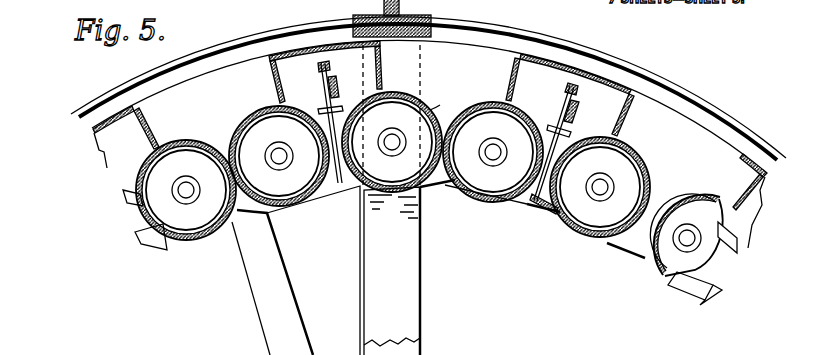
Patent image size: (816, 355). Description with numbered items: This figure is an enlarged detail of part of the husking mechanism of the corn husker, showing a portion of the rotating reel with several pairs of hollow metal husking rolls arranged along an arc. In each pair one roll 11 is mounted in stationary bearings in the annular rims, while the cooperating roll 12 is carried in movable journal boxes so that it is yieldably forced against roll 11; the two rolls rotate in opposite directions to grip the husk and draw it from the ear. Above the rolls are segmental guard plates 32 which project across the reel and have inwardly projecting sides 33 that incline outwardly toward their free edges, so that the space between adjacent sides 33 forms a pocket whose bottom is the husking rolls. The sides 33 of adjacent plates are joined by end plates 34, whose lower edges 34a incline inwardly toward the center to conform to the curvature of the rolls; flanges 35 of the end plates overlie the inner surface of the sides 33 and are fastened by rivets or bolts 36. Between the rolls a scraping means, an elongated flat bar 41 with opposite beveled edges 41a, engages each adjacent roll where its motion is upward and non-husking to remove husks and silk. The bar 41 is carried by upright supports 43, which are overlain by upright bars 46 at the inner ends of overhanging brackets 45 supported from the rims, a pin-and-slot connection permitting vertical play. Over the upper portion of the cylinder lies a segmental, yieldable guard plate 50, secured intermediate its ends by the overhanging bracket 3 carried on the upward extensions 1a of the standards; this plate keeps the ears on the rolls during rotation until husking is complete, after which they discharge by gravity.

The upward extension 1a is at (392, 271).
The upper brace bar 3 is at (402, 8).
The husking roll 11 is at (200, 240).
The husking roll 12 is at (580, 240).
The guard plate 32 is at (307, 50).
The inwardly projecting side 33 is at (272, 92).
The end plate 34 is at (412, 115).
The lower edge of end plate 34a is at (443, 112).
The flange 35 is at (268, 97).
The rivet or bolt 36 is at (628, 124).
The scraper bar 41 is at (524, 206).
The beveled edge 41a is at (546, 213).
The upright support 43 is at (325, 112).
The overhanging bracket 45 is at (338, 88).
The upright bar 46 is at (331, 80).
The guard plate 50 is at (82, 116).